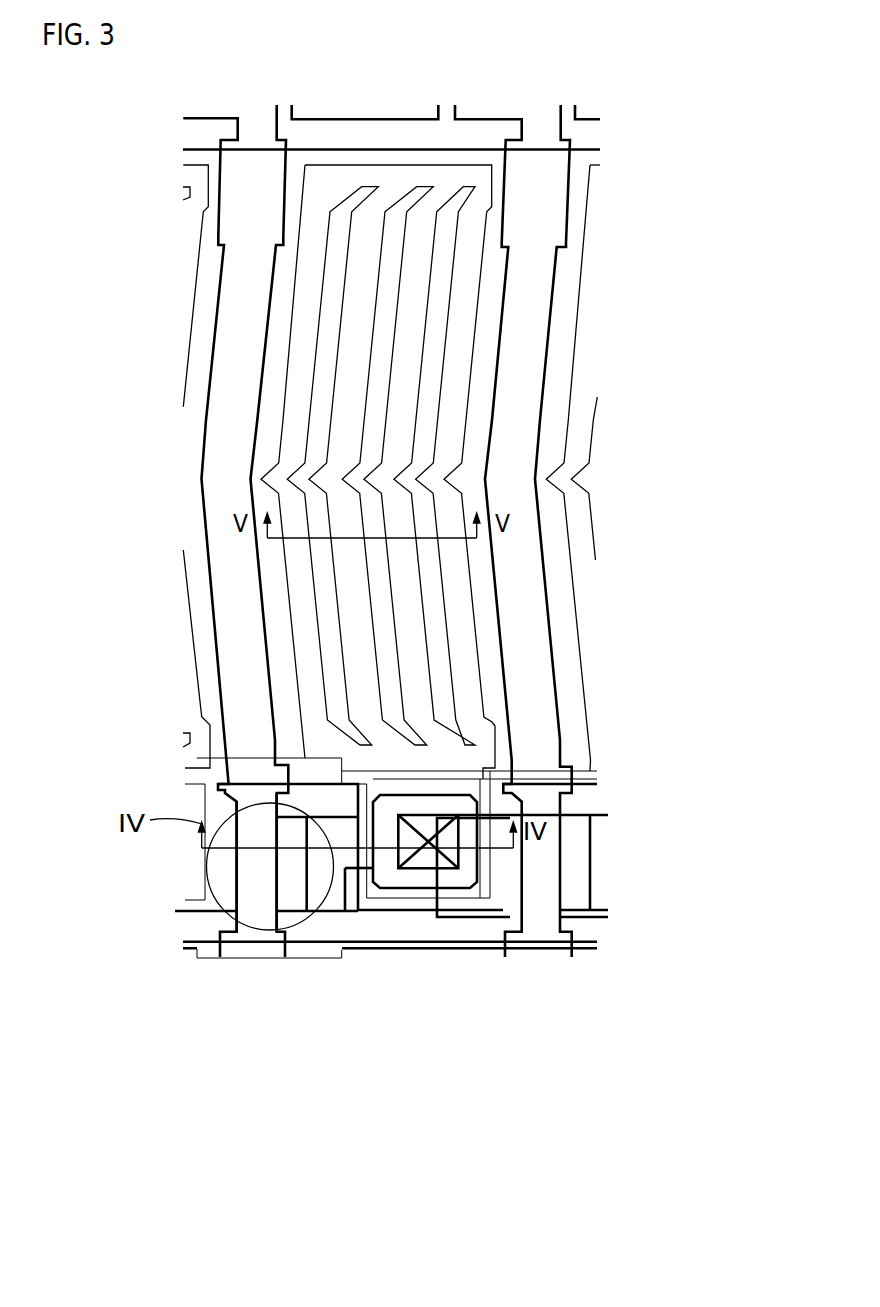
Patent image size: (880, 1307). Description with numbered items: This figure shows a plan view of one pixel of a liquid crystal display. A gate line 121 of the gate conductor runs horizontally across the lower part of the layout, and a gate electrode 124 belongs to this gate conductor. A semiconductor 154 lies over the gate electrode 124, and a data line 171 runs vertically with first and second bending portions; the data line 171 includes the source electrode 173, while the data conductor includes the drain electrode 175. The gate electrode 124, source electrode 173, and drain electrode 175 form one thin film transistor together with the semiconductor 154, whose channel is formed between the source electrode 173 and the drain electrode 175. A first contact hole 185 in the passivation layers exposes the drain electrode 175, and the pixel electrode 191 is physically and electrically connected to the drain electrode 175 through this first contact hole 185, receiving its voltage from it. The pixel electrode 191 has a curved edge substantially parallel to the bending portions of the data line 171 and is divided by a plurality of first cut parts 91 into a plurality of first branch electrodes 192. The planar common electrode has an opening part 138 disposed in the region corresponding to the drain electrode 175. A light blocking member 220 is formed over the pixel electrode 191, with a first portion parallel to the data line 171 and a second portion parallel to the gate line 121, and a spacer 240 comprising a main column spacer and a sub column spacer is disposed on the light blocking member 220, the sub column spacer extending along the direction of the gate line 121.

The first cut part 91 is at (372, 338).
The data line 171 is at (203, 509).
The pixel electrode 191 is at (495, 745).
The first branch electrode 192 is at (395, 613).
The gate line 121 is at (470, 917).
The gate electrode 124 is at (236, 866).
The opening part 138 is at (490, 883).
The semiconductor 154 is at (300, 928).
The source electrode 173 is at (278, 877).
The drain electrode 175 is at (348, 905).
The first contact hole 185 is at (415, 868).
The light blocking member 220 is at (190, 950).
The spacer 240 is at (228, 908).